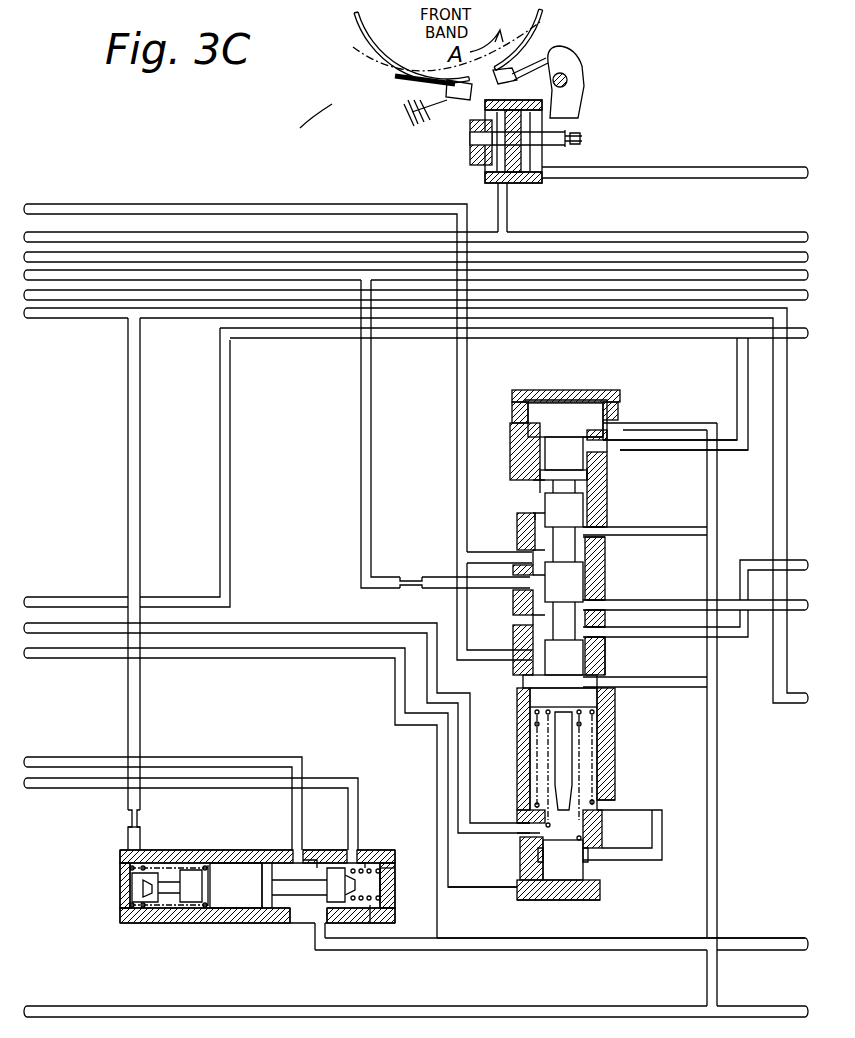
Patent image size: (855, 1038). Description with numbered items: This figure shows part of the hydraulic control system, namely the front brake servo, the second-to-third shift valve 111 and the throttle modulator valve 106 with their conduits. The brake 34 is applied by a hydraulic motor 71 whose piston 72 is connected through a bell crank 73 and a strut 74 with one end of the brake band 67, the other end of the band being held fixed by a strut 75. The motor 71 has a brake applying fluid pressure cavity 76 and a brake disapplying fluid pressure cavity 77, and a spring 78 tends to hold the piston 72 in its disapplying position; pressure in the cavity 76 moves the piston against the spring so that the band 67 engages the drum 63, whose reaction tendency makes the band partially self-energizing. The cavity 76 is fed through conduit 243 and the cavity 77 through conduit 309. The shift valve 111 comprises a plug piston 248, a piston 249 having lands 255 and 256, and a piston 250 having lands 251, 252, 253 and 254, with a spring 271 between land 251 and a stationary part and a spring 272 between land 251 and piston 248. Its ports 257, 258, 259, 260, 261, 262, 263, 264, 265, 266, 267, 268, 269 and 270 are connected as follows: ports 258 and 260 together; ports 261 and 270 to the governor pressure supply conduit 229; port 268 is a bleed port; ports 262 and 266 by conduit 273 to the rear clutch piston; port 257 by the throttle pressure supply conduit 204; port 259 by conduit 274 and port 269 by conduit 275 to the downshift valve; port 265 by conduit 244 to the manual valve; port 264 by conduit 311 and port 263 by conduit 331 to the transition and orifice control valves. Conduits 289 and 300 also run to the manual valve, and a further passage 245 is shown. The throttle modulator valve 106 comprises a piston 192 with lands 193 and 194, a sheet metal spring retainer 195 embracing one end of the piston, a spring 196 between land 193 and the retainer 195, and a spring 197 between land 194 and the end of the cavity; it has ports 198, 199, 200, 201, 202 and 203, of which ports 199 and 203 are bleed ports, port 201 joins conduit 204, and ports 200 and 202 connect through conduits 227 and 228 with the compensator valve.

The drum 63 is at (362, 50).
The brake band 67 is at (402, 78).
The strut 75 is at (408, 112).
The brake 34 is at (332, 110).
The strut 74 is at (528, 60).
The bell crank 73 is at (583, 90).
The hydraulic motor 71 is at (462, 161).
The piston 72 is at (516, 112).
The brake disapplying fluid pressure cavity 77 is at (575, 124).
The brake applying fluid pressure cavity 76 is at (497, 190).
The spring 78 is at (550, 178).
The conduit 309 is at (736, 176).
The conduit 273 is at (65, 210).
The conduit 243 is at (698, 230).
The conduit 300 is at (130, 252).
The conduit 244 is at (738, 258).
The conduit 289 is at (100, 292).
The conduit 331 is at (762, 640).
The passage 245 is at (180, 322).
The conduit 275 is at (298, 338).
The conduit 274 is at (288, 616).
The throttle pressure supply conduit 204 is at (185, 658).
The conduit 227 is at (90, 760).
The conduit 228 is at (66, 778).
The governor pressure supply conduit 229 is at (82, 1018).
The 2-3 shift valve 111 is at (611, 672).
The land 256 is at (540, 418).
The piston 249 is at (538, 456).
The port 268 is at (528, 497).
The land 254 is at (600, 506).
The land 255 is at (602, 470).
The port 269 is at (605, 445).
The port 270 is at (605, 420).
The port 266 is at (533, 555).
The port 267 is at (600, 535).
The land 253 is at (600, 574).
The port 264 is at (608, 610).
The port 265 is at (520, 592).
The piston 250 is at (526, 625).
The land 252 is at (535, 648).
The port 263 is at (600, 640).
The conduit 311 is at (748, 620).
The port 262 is at (525, 678).
The land 251 is at (530, 700).
The port 261 is at (600, 690).
The spring 271 is at (520, 738).
The spring 272 is at (585, 724).
The port 260 is at (605, 802).
The port 259 is at (530, 830).
The port 258 is at (590, 862).
The port 257 is at (545, 880).
The piston 248 is at (570, 890).
The throttle modulator valve 106 is at (257, 926).
The sheet metal spring retainer 195 is at (138, 905).
The spring 196 is at (196, 905).
The land 193 is at (222, 860).
The port 199 is at (245, 908).
The port 200 is at (295, 850).
The land 194 is at (330, 855).
The port 202 is at (350, 855).
The spring 197 is at (380, 866).
The piston 192 is at (366, 888).
The port 203 is at (380, 915).
The port 201 is at (315, 930).
The port 198 is at (140, 850).